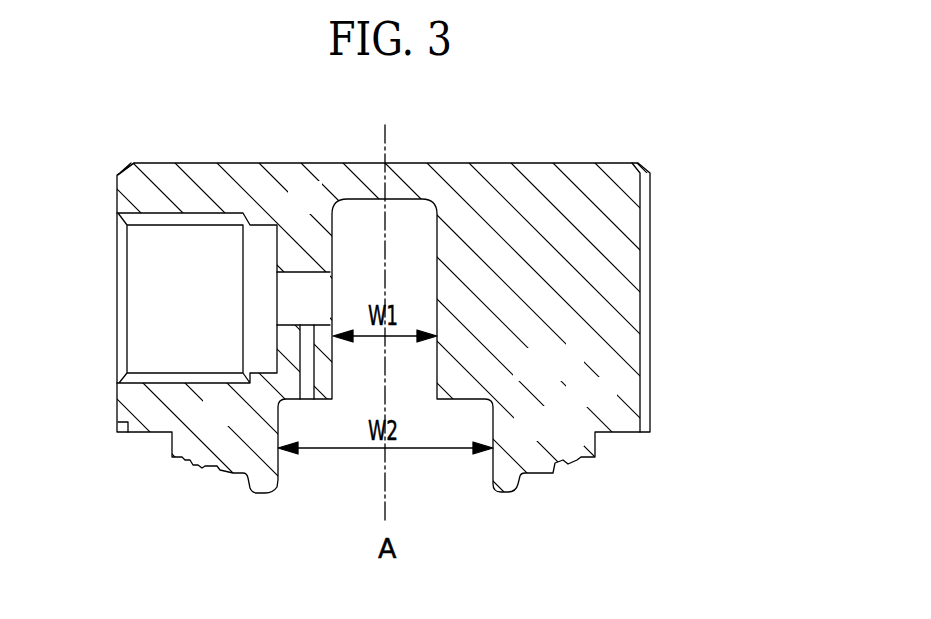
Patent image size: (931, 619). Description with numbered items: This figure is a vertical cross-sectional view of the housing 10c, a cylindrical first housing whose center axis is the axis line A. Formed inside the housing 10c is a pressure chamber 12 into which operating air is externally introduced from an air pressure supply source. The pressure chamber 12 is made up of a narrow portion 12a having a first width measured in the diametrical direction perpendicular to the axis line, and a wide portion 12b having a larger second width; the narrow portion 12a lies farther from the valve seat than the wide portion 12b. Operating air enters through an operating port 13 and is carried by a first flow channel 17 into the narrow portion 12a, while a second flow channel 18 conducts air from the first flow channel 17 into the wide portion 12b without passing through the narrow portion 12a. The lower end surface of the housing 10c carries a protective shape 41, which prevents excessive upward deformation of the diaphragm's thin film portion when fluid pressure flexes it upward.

The housing 10c is at (628, 218).
The operating port 13 is at (148, 293).
The first flow channel 17 is at (304, 287).
The second flow channel 18 is at (305, 374).
The pressure chamber 12 is at (569, 343).
The narrow portion 12a is at (440, 360).
The wide portion 12b is at (466, 420).
The protective shape 41 is at (565, 478).